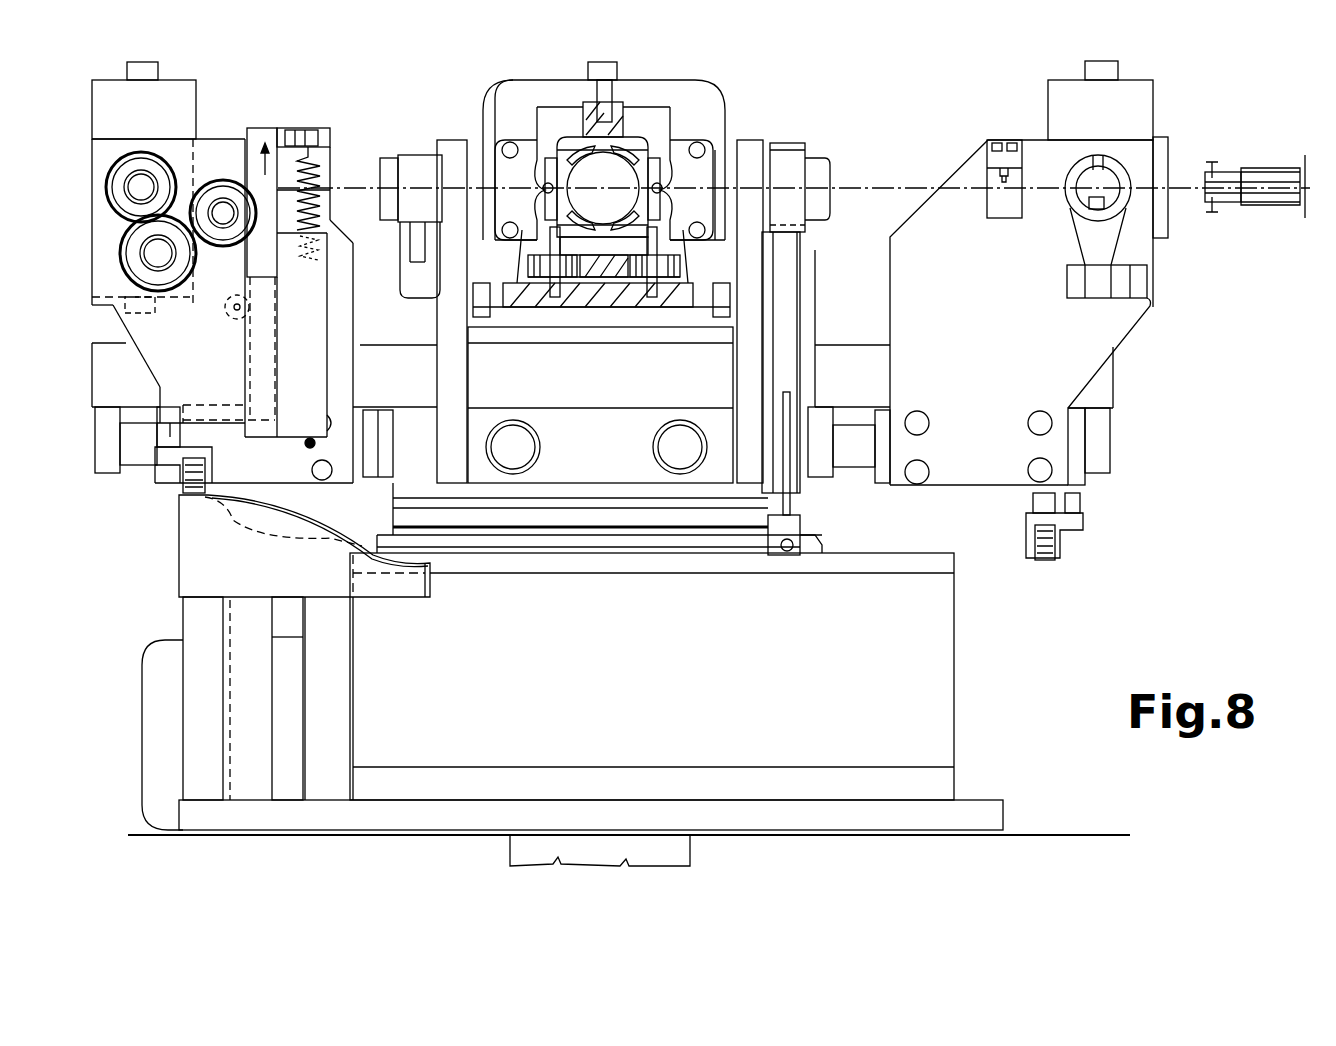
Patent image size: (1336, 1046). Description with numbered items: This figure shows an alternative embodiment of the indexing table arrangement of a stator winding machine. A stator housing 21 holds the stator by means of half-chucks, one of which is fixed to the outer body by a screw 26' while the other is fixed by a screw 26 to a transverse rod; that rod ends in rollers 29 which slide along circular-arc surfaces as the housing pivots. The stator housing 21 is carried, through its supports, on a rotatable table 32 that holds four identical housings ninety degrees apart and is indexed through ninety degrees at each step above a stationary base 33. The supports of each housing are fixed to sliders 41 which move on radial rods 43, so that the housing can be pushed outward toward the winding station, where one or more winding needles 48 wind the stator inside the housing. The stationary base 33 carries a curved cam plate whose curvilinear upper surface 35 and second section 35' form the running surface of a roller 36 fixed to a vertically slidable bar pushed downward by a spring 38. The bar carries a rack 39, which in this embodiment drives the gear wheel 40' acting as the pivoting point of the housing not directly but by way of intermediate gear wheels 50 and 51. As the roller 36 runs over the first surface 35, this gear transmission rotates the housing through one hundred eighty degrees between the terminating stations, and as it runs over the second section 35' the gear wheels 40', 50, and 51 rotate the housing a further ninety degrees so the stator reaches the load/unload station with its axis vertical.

The stator housing 21 is at (522, 78).
The screw 26 is at (609, 305).
The screw 26' is at (645, 82).
The rollers 29 is at (484, 300).
The rotatable table 32 is at (418, 425).
The stationary base 33 is at (913, 682).
The curvilinear upper surface 35 is at (304, 546).
The second section 35' is at (240, 532).
The roller 36 is at (185, 478).
The spring 38 is at (312, 190).
The rack 39 is at (262, 140).
The gear wheel 40' is at (477, 162).
The sliders 41 is at (363, 410).
The radial rods 43 is at (138, 455).
The winding needles 48 is at (1265, 205).
The gear wheel 50 is at (172, 277).
The gear wheel 51 is at (214, 182).